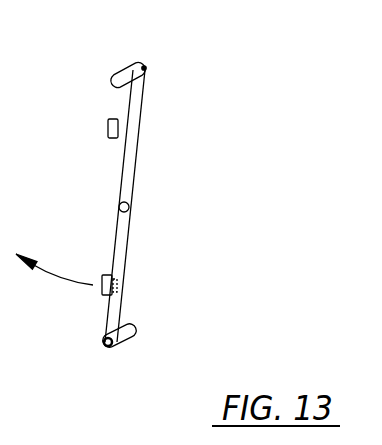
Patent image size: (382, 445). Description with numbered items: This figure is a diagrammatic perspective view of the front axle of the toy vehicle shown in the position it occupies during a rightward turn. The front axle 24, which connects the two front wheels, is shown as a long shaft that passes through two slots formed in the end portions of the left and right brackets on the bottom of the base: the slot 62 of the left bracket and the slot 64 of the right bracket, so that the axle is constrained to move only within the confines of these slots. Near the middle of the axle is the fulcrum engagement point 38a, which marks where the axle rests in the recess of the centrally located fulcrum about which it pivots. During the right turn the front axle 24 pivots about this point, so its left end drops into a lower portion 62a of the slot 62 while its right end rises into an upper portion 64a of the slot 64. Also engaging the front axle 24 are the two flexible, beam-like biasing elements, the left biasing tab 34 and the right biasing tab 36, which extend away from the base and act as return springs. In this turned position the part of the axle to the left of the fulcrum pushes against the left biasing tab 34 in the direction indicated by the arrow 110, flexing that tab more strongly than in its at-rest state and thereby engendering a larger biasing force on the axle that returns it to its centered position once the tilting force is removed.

The front axle 24 is at (131, 175).
The left biasing tab 34 is at (99, 291).
The right biasing tab 36 is at (108, 128).
The aperture 38a is at (129, 209).
The slot of left bracket 62 is at (130, 345).
The lower portion of slot 62a is at (102, 348).
The slot of right bracket 64 is at (117, 75).
The upper portion of slot 64a is at (146, 68).
The arrow 110 is at (65, 277).